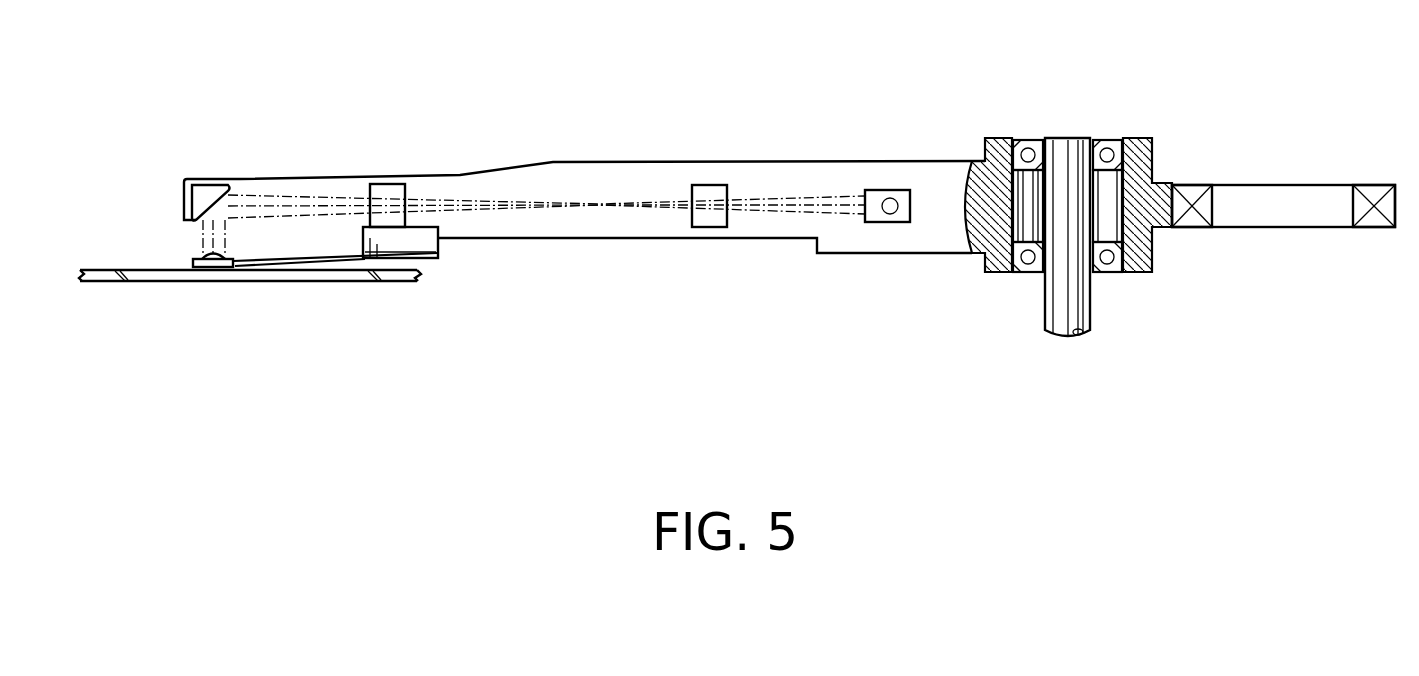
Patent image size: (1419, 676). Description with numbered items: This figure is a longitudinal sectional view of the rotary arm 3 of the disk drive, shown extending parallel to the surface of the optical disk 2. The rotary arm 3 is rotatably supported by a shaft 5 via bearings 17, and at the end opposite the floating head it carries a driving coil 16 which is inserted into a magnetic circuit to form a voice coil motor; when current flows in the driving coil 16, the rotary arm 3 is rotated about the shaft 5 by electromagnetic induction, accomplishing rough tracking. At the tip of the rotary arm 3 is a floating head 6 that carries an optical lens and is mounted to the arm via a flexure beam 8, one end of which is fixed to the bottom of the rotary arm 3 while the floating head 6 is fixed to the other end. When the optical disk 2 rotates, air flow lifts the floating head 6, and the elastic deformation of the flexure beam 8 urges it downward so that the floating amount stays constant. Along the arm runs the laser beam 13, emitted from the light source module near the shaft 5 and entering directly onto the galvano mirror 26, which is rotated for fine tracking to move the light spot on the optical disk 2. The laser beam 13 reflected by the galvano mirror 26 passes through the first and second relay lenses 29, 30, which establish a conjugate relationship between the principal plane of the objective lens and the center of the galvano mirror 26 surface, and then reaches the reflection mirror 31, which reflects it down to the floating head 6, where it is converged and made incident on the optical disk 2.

The optical disk 2 is at (170, 281).
The rotary arm 3 is at (609, 135).
The shaft 5 is at (1077, 150).
The floating head 6 is at (158, 250).
The flexure beam 8 is at (297, 261).
The laser beam 13 is at (305, 176).
The driving coil 16 is at (1198, 183).
The bearings 17 is at (1027, 141).
The galvano mirror 26 is at (885, 188).
The first relay lens 29 is at (705, 222).
The second relay lens 30 is at (392, 184).
The reflection mirror 31 is at (204, 192).